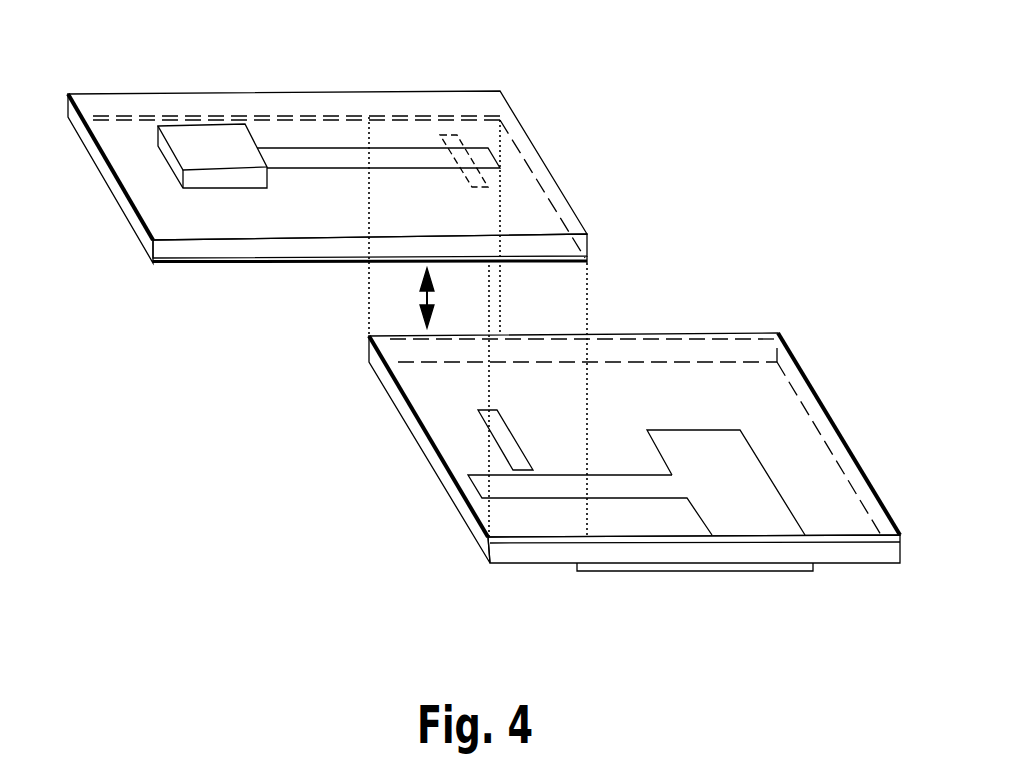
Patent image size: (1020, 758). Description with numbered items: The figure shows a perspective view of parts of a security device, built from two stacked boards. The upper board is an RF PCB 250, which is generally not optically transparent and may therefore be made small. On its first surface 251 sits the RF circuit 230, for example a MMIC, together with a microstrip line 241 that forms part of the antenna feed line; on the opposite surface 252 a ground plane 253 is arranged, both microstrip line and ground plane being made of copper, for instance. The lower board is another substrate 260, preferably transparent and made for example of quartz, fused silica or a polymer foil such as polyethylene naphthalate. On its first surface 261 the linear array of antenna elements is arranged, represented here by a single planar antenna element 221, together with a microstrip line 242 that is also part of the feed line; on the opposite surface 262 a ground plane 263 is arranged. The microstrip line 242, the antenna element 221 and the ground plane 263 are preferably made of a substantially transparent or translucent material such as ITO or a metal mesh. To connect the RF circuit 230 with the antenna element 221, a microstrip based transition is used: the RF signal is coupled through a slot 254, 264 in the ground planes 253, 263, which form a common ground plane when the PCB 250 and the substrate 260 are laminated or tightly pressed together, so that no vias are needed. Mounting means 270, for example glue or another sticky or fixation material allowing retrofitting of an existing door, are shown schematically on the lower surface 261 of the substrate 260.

The planar antenna element 221 is at (758, 455).
The RF circuit 230 is at (215, 123).
The microstrip line 241 is at (333, 147).
The microstrip line 242 is at (623, 475).
The RF PCB 250 is at (167, 203).
The first surface 251 is at (129, 134).
The opposite surface 252 is at (176, 282).
The ground plane 253 is at (248, 265).
The slot 254 is at (440, 133).
The substrate 260 is at (432, 457).
The first surface 261 is at (508, 590).
The opposite surface 262 is at (559, 561).
The ground plane 263 is at (748, 333).
The slot 264 is at (512, 428).
The mounting means 270 is at (715, 572).